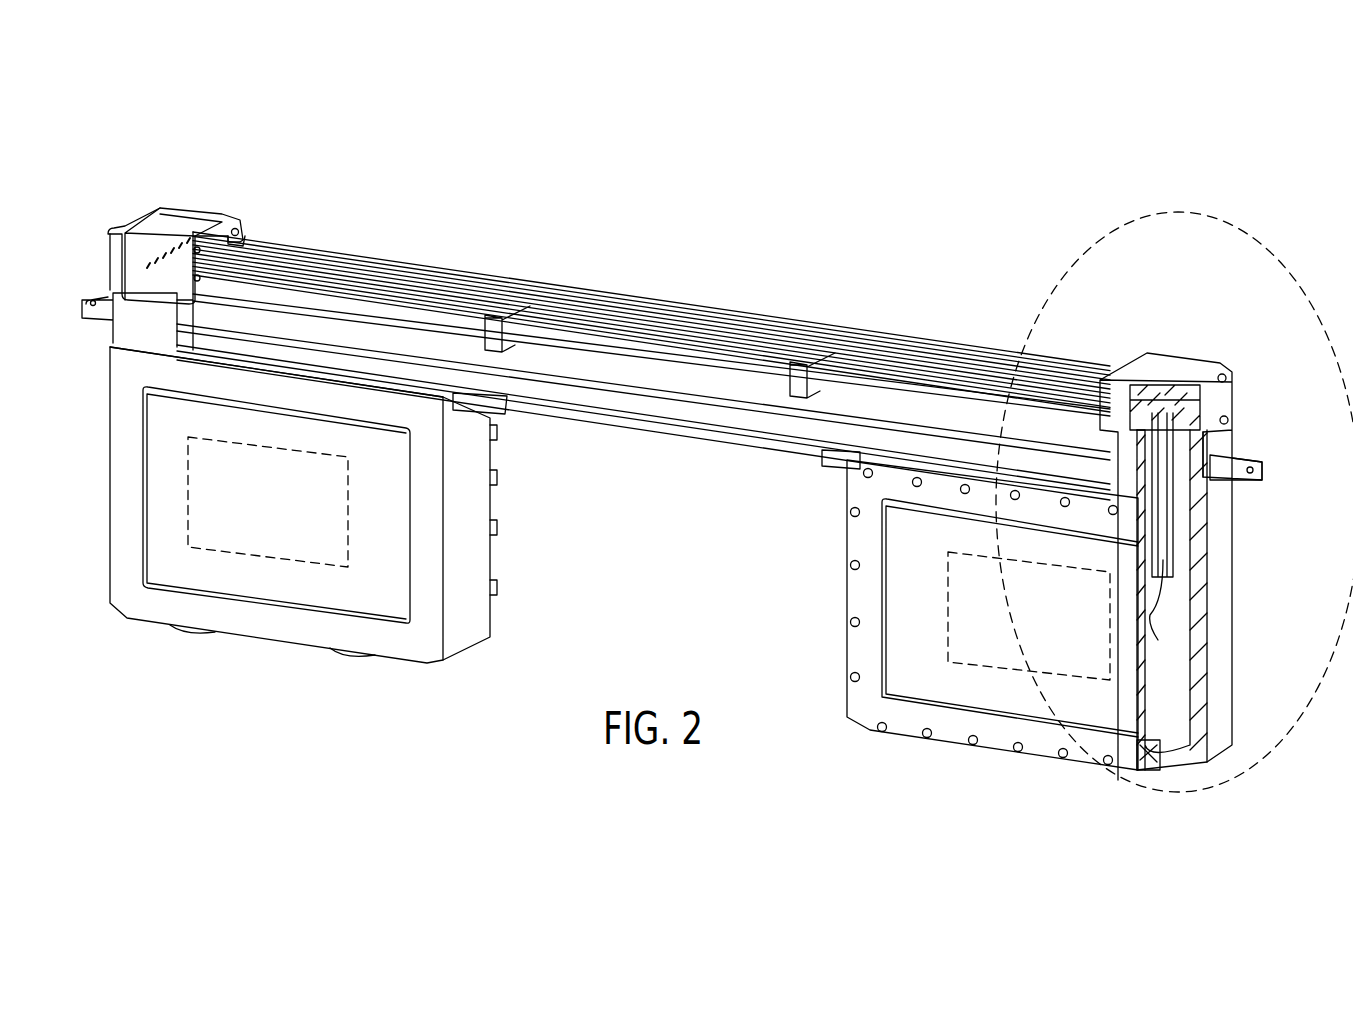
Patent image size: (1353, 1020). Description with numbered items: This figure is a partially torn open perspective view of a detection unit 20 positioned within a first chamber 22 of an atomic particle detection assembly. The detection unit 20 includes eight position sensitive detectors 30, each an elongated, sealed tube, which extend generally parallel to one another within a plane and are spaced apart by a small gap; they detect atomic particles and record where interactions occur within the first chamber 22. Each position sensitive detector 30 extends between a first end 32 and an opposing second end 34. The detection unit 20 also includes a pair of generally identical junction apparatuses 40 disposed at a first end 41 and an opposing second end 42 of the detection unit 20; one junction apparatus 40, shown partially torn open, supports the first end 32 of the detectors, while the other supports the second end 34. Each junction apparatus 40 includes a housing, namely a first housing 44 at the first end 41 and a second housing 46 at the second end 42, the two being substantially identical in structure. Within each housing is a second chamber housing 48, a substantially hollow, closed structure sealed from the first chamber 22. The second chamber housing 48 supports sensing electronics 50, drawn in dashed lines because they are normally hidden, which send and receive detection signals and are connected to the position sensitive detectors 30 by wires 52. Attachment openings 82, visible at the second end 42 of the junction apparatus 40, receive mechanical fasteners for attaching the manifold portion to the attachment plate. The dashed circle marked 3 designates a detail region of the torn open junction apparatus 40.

The detection unit 20 is at (290, 112).
The first chamber 22 is at (665, 536).
The position sensitive detectors 30 is at (427, 300).
The first end 32 is at (1068, 392).
The second end 34 is at (251, 238).
The junction apparatus 40 is at (165, 190).
The first end 41 is at (1158, 350).
The second end 42 is at (195, 212).
The first housing 44 is at (893, 578).
The second housing 46 is at (404, 526).
The second chamber housing 48 is at (1175, 648).
The sensing electronics 50 is at (273, 447).
The wires 52 is at (1150, 630).
The attachment openings 82 is at (193, 278).
The detail region FIG. 3 is at (1190, 212).